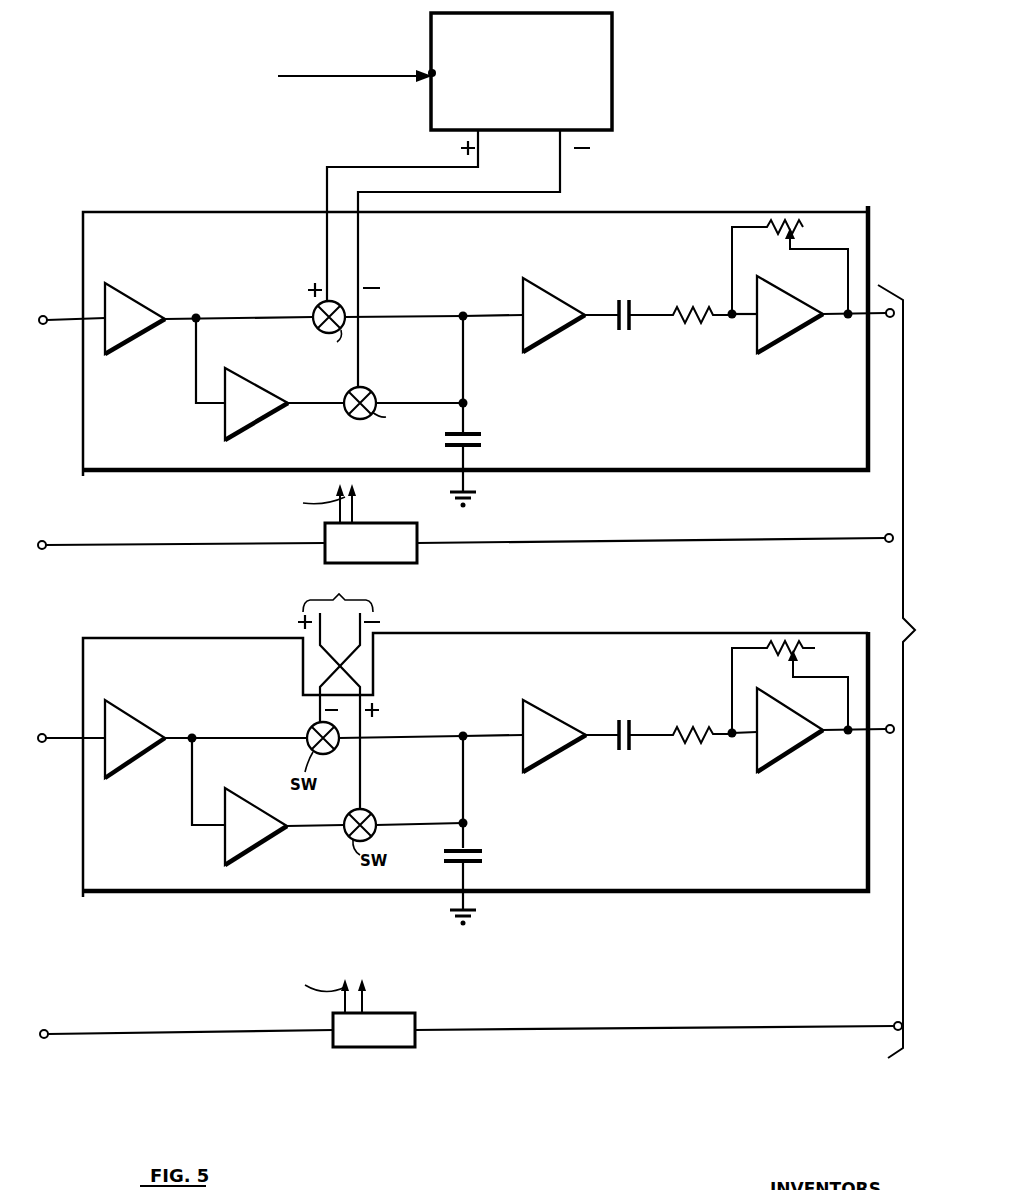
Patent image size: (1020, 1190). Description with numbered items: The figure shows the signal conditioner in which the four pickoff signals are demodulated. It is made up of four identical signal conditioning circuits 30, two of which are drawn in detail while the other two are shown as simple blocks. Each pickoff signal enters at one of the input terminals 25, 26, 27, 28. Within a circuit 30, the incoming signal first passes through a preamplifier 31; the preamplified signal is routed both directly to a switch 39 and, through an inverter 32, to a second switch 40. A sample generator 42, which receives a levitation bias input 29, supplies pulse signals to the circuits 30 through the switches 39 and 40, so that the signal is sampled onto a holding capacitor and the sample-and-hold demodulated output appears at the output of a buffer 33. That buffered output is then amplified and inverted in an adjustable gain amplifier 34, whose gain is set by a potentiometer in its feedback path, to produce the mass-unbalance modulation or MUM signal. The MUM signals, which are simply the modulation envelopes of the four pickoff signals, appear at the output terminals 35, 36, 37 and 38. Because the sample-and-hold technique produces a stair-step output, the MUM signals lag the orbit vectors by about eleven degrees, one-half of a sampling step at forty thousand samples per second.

The input terminal 25 is at (40, 325).
The input terminal 26 is at (42, 550).
The input terminal 27 is at (42, 743).
The input terminal 28 is at (47, 1031).
The levitation bias input 29 is at (432, 72).
The signal conditioning circuit 30 is at (172, 220).
The preamplifier 31 is at (123, 315).
The inverter 32 is at (236, 402).
The buffer 33 is at (541, 318).
The adjustable gain amplifier 34 is at (770, 310).
The output terminal 35 is at (890, 318).
The output terminal 36 is at (887, 542).
The output terminal 37 is at (890, 734).
The output terminal 38 is at (895, 1030).
The switch 39 is at (318, 307).
The switch 40 is at (360, 392).
The sample generator 42 is at (588, 100).